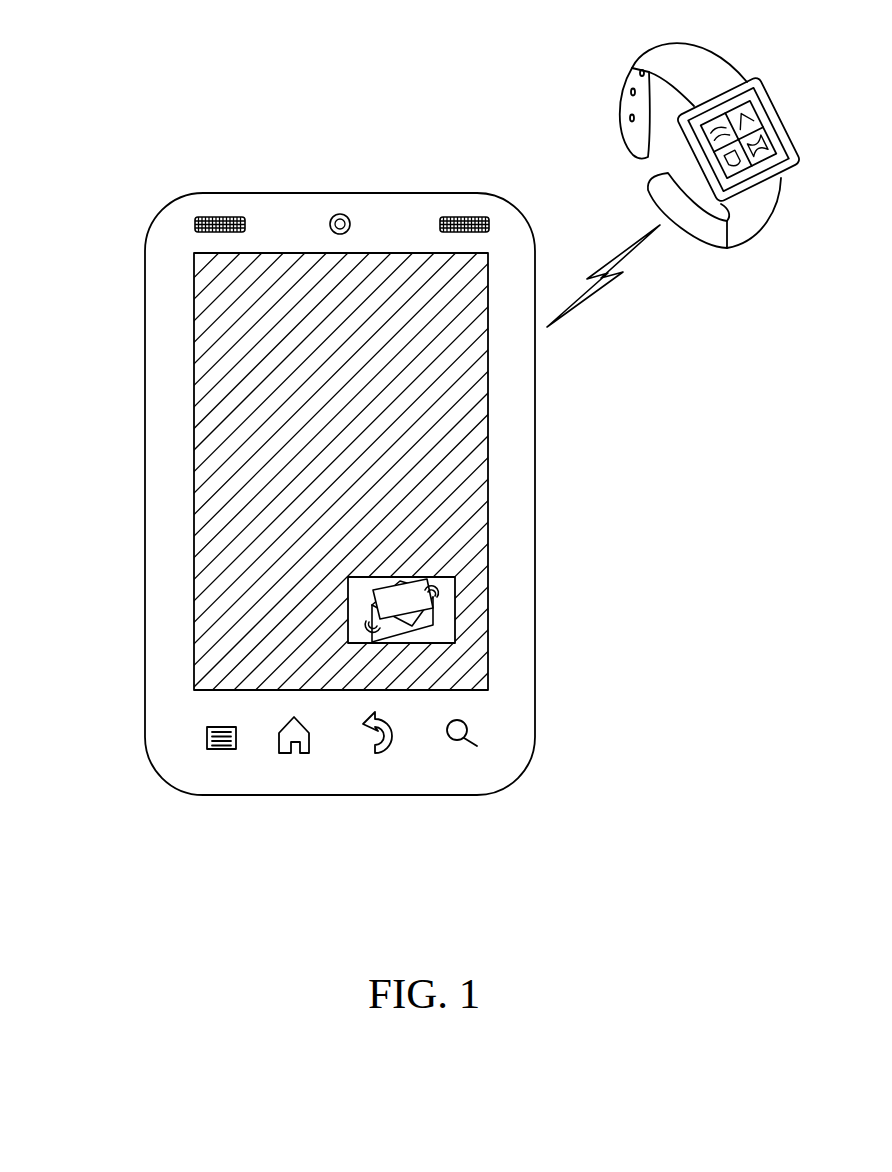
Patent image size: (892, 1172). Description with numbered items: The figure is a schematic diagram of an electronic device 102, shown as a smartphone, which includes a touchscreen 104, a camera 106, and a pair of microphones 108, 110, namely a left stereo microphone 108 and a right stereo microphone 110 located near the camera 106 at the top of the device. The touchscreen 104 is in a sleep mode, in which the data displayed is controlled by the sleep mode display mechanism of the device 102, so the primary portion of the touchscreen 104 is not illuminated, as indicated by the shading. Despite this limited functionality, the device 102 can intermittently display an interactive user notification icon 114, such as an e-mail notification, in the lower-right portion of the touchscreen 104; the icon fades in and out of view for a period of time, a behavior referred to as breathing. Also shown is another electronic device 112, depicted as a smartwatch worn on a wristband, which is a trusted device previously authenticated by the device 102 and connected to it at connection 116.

The electronic device 102 is at (95, 146).
The touchscreen 104 is at (227, 330).
The camera 106 is at (340, 214).
The left stereo microphone 108 is at (222, 217).
The right stereo microphone 110 is at (463, 217).
The another electronic device 112 is at (690, 57).
The user notification icon 114 is at (455, 607).
The connection 116 is at (625, 250).